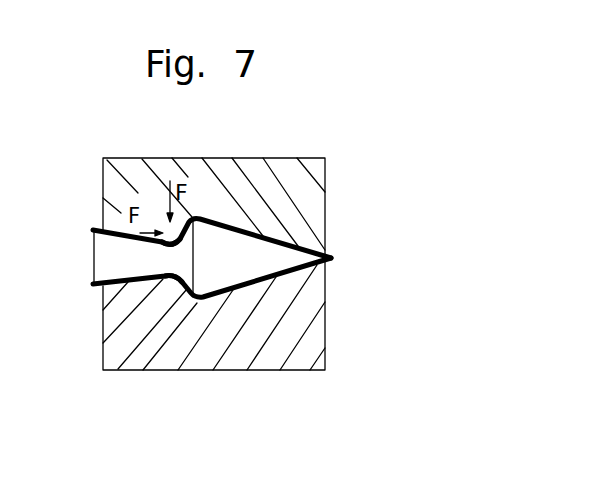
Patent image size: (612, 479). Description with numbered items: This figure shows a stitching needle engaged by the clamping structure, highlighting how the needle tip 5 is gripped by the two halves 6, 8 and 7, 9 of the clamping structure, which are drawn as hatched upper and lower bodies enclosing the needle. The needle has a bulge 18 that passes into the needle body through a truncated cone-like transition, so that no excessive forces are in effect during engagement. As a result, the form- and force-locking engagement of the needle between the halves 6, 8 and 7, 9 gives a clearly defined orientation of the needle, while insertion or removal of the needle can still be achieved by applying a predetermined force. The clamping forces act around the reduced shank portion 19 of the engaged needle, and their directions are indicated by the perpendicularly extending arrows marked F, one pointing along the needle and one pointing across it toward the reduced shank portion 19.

The needle tip 5 is at (242, 258).
The half of the clamping structure 6 is at (252, 207).
The half of the clamping structure 8 is at (289, 201).
The half of the clamping structure 7 is at (258, 314).
The half of the clamping structure 9 is at (298, 334).
The bulge 18 is at (198, 299).
The reduced shank portion 19 is at (173, 279).